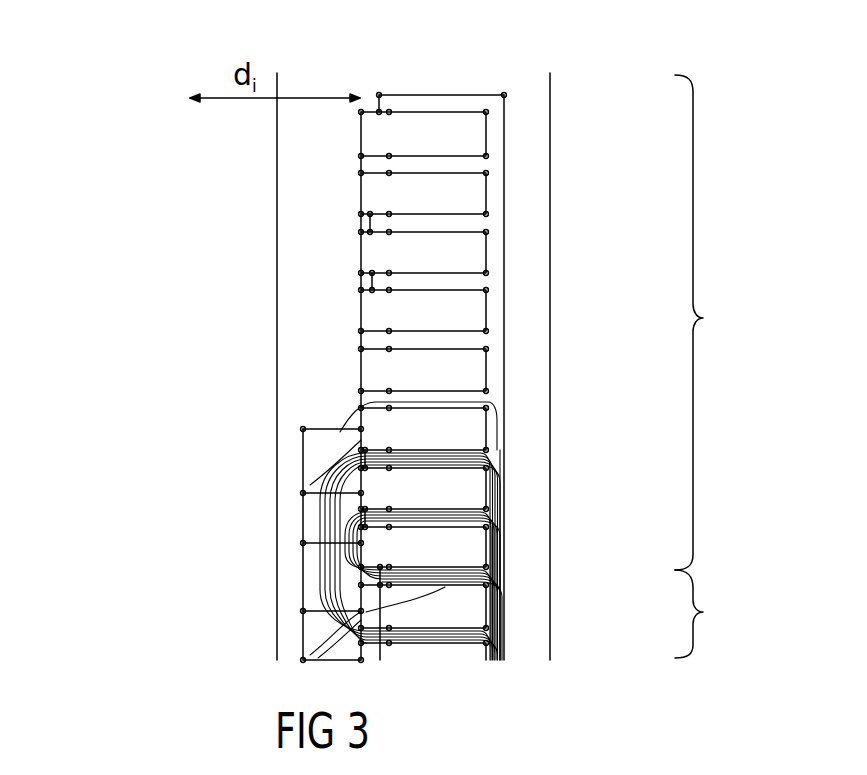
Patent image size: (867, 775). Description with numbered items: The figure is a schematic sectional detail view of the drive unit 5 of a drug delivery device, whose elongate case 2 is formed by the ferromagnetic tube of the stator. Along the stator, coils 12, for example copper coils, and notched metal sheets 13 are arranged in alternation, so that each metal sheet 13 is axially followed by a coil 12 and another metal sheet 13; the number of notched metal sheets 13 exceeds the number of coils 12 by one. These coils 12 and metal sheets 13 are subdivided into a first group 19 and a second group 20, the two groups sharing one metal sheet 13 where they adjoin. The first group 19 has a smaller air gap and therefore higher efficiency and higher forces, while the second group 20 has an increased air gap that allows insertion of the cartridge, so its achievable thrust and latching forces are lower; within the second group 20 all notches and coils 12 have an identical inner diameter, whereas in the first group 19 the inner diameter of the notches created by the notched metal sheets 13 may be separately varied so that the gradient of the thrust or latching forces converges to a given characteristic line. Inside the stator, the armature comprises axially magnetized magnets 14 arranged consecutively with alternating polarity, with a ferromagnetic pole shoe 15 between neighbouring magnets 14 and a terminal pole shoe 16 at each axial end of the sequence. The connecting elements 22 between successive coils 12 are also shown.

The case 2 is at (486, 376).
The drive unit 5 is at (156, 158).
The coil 12 is at (470, 137).
The notched metal sheet 13 is at (470, 166).
The magnet 14 is at (303, 460).
The pole shoe 15 is at (303, 517).
The terminal pole shoe 16 is at (301, 442).
The first group 19 is at (710, 322).
The second group 20 is at (710, 614).
The connecting element 22 is at (366, 106).